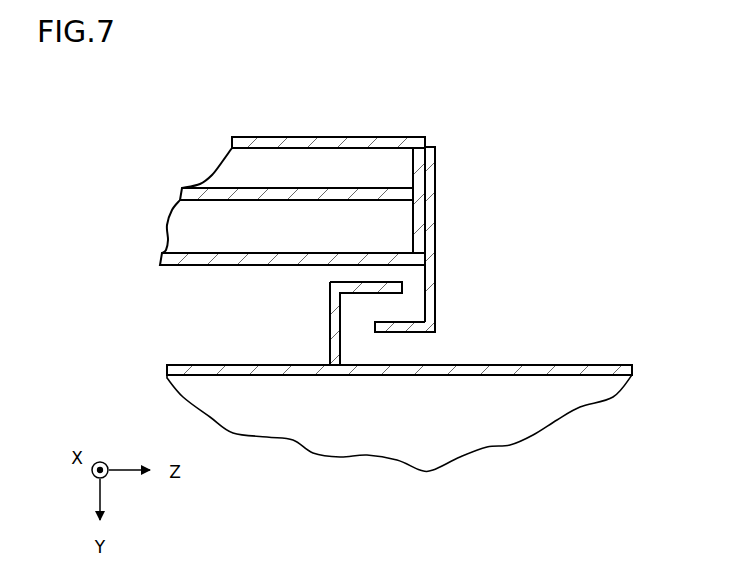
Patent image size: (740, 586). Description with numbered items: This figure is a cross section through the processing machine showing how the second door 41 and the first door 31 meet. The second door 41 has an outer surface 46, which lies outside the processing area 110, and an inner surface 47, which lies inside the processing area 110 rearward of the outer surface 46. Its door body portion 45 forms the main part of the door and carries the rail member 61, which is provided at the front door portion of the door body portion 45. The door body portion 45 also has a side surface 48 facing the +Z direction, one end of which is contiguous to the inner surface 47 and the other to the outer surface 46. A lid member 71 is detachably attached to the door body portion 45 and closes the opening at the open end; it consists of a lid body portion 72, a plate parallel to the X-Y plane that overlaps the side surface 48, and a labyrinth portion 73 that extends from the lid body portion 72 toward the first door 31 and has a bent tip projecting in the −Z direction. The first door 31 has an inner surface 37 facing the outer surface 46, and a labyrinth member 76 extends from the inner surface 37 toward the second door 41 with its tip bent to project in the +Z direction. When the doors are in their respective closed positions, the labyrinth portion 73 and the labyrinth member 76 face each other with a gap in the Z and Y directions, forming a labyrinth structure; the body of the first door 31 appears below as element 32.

The processing area 110 is at (570, 118).
The second door 41 is at (421, 118).
The inner surface 47 is at (318, 137).
The rail member 61 is at (168, 224).
The side surface 48 is at (427, 167).
The door body portion 45 is at (428, 200).
The outer surface 46 is at (222, 265).
The lid member 71 is at (484, 223).
The lid body portion 72 is at (428, 230).
The labyrinth portion 73 is at (432, 294).
The labyrinth member 76 is at (337, 307).
The first door 31 is at (601, 362).
The inner surface 37 is at (183, 363).
The substrate body 32 is at (497, 425).